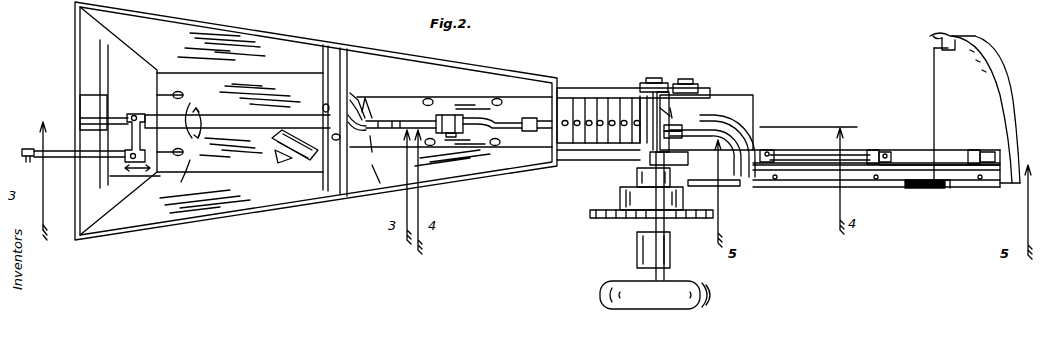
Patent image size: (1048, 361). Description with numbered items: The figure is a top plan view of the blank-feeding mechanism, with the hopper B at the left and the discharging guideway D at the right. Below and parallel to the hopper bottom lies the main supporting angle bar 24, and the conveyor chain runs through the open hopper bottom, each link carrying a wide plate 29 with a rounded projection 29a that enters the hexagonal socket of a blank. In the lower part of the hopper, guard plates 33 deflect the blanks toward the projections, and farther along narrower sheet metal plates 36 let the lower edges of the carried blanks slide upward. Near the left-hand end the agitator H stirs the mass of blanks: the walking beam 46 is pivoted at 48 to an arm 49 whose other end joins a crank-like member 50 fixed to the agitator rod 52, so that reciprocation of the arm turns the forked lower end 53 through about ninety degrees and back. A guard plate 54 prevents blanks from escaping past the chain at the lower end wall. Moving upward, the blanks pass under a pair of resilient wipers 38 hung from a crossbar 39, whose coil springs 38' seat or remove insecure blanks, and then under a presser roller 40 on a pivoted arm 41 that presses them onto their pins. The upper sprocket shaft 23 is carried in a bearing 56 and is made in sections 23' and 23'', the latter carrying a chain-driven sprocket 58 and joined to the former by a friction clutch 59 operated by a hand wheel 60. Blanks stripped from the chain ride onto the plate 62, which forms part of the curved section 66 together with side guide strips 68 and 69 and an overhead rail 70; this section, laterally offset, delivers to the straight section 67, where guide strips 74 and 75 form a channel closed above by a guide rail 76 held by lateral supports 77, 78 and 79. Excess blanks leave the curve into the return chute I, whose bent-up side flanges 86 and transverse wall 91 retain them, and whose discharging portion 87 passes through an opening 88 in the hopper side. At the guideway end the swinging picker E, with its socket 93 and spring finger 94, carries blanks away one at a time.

The hopper B is at (290, 50).
The crossbar 39 is at (333, 60).
The guard plates 33 is at (282, 98).
The pivot 48 is at (27, 148).
The arm 49 is at (65, 150).
The walking beam 46 is at (60, 162).
The crank-like member 50 is at (112, 120).
The agitator rod 52 is at (178, 140).
The agitator H is at (194, 112).
The forked lower end 53 is at (177, 174).
The guard plate 54 is at (128, 180).
The discharging portion 87 is at (300, 162).
The opening 88 is at (283, 165).
The sheet metal plates 36 is at (388, 96).
The resilient wipers 38 is at (362, 95).
The coil springs 38' is at (401, 100).
The presser roller 40 is at (449, 114).
The pivoted arm 41 is at (480, 110).
The side flanges 86 is at (515, 180).
The return chute I is at (555, 178).
The main supporting angle bar 24 is at (568, 88).
The plate 29 is at (612, 108).
The rounded projection 29a is at (588, 122).
The upper sprocket shaft 23 is at (665, 101).
The shaft section 23' is at (622, 216).
The shaft section 23'' is at (609, 269).
The friction clutch 59 is at (618, 198).
The chain-driven sprocket 58 is at (598, 218).
The bearing 56 is at (636, 248).
The hand wheel 60 is at (598, 296).
The plate 62 is at (755, 108).
The curved section 66 is at (732, 120).
The side guide strip 69 is at (712, 114).
The overhead rail 70 is at (748, 127).
The side guide strip 68 is at (687, 140).
The wall 91 is at (730, 184).
The guide strip 74 is at (820, 180).
The guide strip 75 is at (818, 154).
The lateral support 77 is at (770, 150).
The lateral support 78 is at (874, 151).
The lateral support 79 is at (978, 151).
The straight section 67 is at (900, 152).
The guide rail 76 is at (900, 172).
The discharging guideway D is at (851, 173).
The swinging picker E is at (934, 76).
The socket 93 is at (940, 46).
The spring finger 94 is at (936, 34).